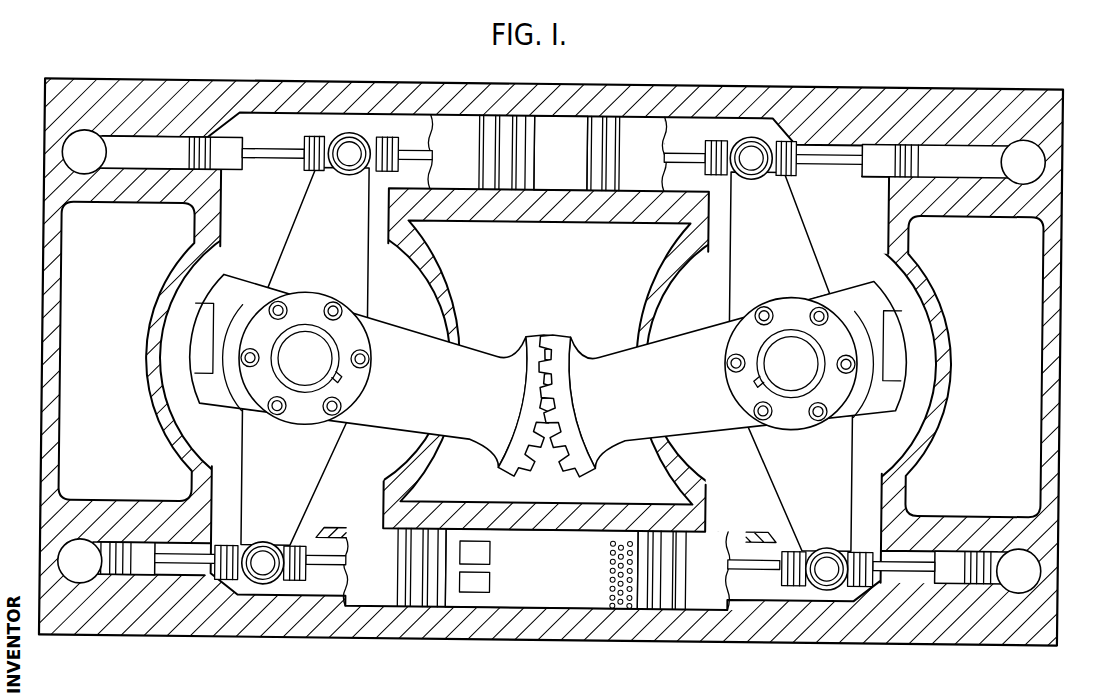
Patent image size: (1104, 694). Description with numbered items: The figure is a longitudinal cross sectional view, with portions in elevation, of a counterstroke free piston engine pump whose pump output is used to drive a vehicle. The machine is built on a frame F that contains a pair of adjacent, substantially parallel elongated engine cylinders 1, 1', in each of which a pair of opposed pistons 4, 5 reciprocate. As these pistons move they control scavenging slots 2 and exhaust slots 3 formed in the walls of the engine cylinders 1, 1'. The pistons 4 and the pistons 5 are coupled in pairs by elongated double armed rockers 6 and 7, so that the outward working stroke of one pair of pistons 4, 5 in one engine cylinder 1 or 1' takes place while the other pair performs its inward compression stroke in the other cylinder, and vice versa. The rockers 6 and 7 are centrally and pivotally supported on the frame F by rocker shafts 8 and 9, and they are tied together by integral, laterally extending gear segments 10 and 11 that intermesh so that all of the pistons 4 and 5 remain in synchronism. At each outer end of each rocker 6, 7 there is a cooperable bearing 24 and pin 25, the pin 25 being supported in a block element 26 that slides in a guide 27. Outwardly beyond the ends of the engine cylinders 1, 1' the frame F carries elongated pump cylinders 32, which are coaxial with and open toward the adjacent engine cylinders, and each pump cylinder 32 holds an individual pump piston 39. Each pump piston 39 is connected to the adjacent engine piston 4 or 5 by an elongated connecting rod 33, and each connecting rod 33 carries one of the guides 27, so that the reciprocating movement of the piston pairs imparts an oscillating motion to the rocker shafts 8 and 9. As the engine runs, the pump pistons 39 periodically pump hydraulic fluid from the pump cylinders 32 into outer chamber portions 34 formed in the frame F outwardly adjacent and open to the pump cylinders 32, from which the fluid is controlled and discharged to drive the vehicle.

The frame F is at (58, 385).
The engine cylinder 1 is at (552, 135).
The engine cylinder 1' is at (542, 584).
The scavenging slots 2 is at (622, 596).
The exhaust slots 3 is at (480, 586).
The piston 4 is at (468, 119).
The piston 5 is at (638, 117).
The double armed rocker 6 is at (356, 292).
The double armed rocker 7 is at (739, 280).
The rocker shaft 8 is at (300, 369).
The rocker shaft 9 is at (782, 355).
The gear segment 10 is at (533, 345).
The gear segment 11 is at (575, 345).
The bearing 24 is at (362, 176).
The pin 25 is at (345, 162).
The block element 26 is at (390, 150).
The guide 27 is at (308, 172).
The pump cylinder 32 is at (128, 154).
The connecting rod 33 is at (283, 156).
The outer chamber portion 34 is at (76, 155).
The pump piston 39 is at (230, 168).